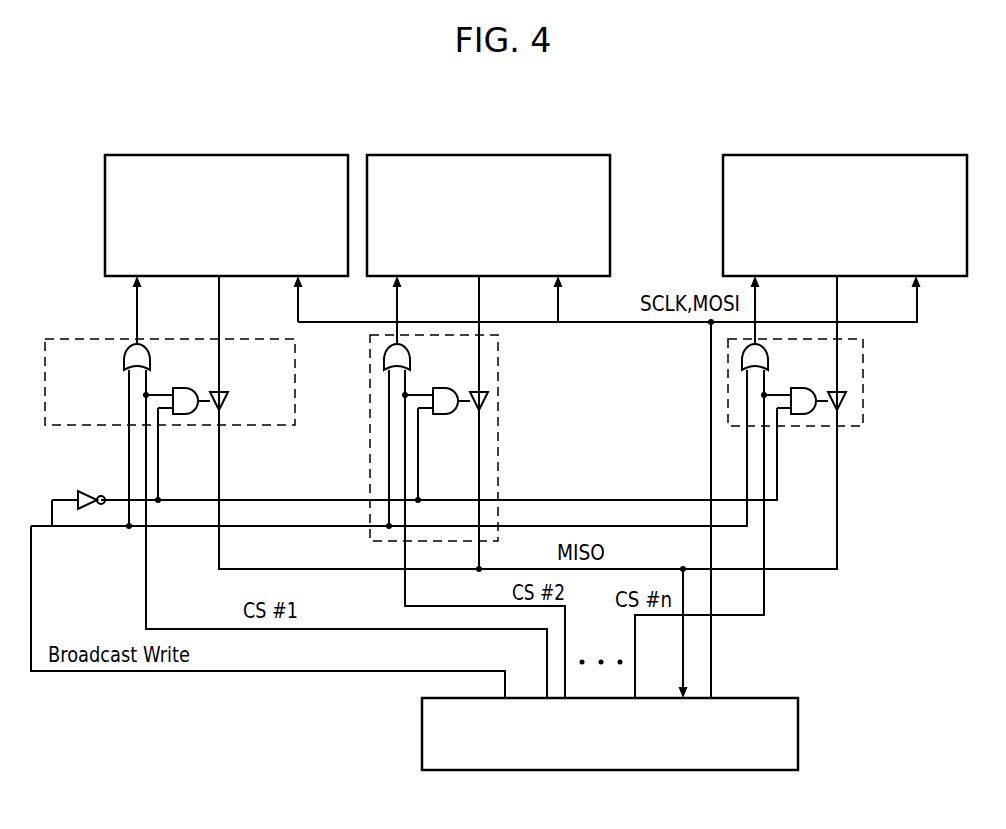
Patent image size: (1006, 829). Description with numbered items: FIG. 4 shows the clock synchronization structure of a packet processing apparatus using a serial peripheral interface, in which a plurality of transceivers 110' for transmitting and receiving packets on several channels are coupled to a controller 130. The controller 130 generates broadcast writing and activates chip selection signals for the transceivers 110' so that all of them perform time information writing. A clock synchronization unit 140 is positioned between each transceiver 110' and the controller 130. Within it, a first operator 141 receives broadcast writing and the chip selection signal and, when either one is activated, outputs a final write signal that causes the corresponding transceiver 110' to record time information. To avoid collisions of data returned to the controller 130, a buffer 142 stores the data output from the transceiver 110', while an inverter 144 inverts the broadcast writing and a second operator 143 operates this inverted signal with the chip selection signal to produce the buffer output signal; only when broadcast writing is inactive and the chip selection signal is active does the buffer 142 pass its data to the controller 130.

The transceiver 110' is at (536, 192).
The controller 130 is at (798, 733).
The clock synchronization unit 140 is at (170, 378).
The first operator 141 is at (123, 362).
The buffer 142 is at (249, 404).
The second operator 143 is at (184, 388).
The inverter 144 is at (80, 490).